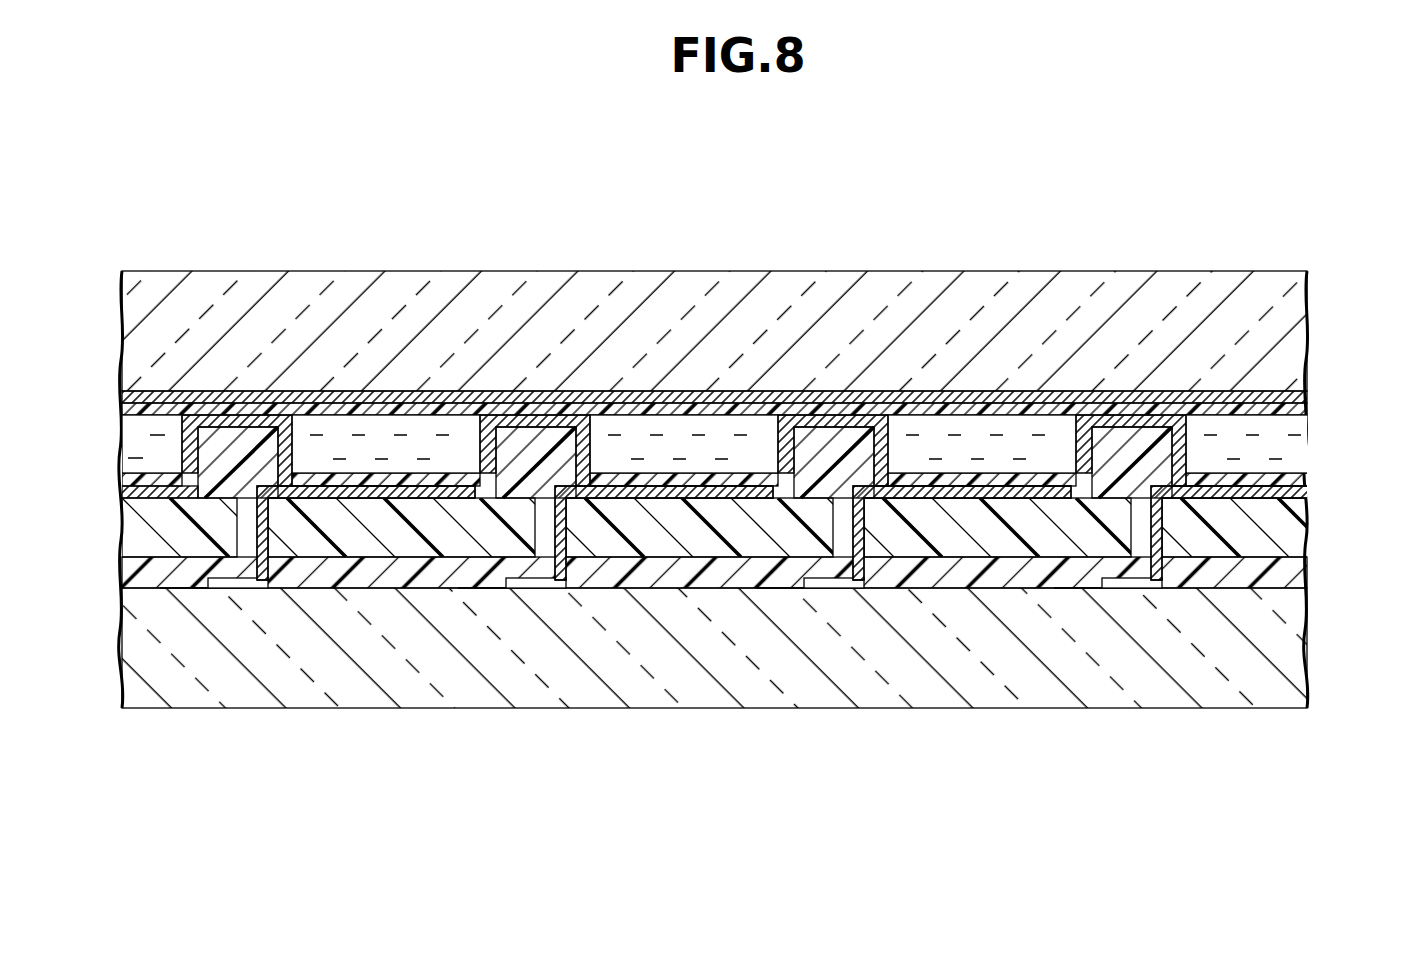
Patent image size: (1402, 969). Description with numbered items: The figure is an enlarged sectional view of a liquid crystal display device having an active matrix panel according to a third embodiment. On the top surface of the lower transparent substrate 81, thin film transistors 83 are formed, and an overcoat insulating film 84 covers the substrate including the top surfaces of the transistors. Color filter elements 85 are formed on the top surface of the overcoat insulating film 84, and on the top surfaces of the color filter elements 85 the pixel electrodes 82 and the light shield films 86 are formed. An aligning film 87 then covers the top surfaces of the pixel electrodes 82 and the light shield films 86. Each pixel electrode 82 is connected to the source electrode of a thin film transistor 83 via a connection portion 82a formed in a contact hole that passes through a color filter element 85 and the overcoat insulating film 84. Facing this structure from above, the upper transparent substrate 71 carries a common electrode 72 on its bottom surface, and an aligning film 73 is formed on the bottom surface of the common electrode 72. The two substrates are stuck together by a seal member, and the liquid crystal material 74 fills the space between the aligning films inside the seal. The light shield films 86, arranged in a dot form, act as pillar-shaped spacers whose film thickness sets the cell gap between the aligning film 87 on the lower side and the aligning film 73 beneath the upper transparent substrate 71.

The upper transparent substrate 71 is at (152, 285).
The common electrode 72 is at (342, 397).
The aligning film 73 is at (421, 413).
The liquid crystal material 74 is at (1295, 444).
The lower transparent substrate 81 is at (142, 699).
The pixel electrode 82 is at (377, 497).
The connection portion 82a is at (283, 545).
The thin film transistor 83 is at (227, 588).
The overcoat insulating film 84 is at (1295, 580).
The color filter element 85 is at (1295, 538).
The light shield film 86 is at (238, 440).
The aligning film 87 is at (1298, 481).